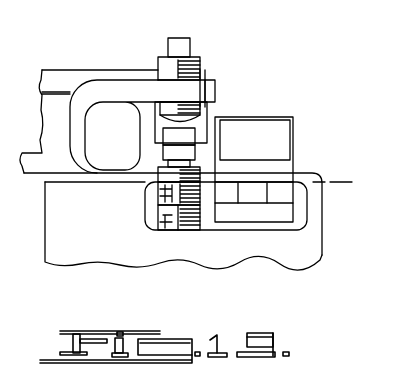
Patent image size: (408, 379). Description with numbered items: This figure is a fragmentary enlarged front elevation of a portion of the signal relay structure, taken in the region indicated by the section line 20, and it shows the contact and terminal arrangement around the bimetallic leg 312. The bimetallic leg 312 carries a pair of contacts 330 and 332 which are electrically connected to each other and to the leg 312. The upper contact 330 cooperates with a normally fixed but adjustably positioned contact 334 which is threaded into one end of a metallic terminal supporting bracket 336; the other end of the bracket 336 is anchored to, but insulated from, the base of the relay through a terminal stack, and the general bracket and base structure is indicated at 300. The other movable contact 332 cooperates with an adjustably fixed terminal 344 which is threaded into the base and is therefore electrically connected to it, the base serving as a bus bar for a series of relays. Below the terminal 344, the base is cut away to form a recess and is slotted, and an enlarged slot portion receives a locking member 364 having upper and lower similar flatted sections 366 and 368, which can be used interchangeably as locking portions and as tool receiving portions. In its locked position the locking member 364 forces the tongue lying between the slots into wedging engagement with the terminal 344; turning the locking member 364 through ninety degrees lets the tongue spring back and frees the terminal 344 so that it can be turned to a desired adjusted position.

The mounting body / bracket 300 is at (70, 68).
The metallic terminal supporting bracket 336 is at (113, 85).
The adjustably positioned contact 334 is at (200, 62).
The bimetallic leg 312 is at (205, 112).
The contact 330 is at (165, 128).
The movable contact 332 is at (165, 146).
The adjustably fixed terminal 344 is at (137, 185).
The upper flatted section 366 is at (273, 123).
The lower flatted section 368 is at (277, 217).
The locking member 364 is at (297, 163).
The section line 20- 20 is at (103, 150).